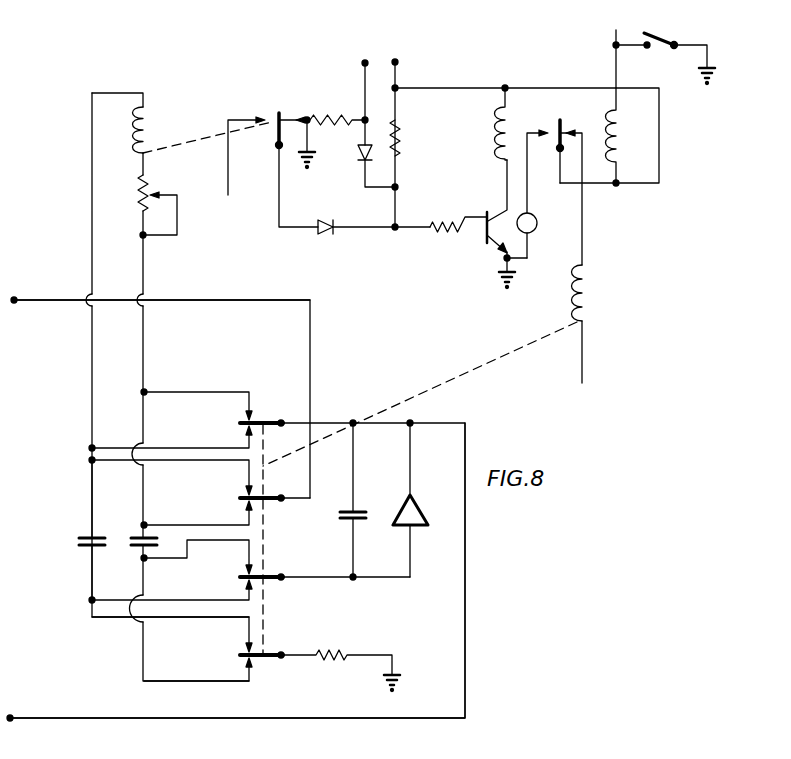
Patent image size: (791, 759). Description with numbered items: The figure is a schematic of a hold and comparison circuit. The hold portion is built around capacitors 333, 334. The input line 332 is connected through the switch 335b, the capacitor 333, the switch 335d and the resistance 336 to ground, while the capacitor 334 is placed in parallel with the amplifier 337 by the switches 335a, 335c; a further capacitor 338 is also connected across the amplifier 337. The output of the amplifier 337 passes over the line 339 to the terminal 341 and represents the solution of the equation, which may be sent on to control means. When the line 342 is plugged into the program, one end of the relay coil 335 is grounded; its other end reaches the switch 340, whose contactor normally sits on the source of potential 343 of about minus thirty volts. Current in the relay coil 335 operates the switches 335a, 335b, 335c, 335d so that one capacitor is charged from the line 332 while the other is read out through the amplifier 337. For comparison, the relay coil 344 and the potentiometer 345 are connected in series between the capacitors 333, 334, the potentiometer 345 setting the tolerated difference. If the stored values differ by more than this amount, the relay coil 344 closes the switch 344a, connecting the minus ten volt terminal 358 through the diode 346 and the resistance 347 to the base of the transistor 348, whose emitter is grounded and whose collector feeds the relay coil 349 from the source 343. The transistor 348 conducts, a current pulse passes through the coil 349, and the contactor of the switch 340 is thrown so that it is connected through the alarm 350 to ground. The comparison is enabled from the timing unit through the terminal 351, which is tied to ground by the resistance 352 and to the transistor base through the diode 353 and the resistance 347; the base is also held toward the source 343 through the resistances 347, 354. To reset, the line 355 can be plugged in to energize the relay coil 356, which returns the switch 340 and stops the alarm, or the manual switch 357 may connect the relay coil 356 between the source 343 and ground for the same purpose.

The line 332 is at (14, 300).
The capacitor 333 is at (138, 536).
The capacitor 334 is at (85, 537).
The relay coil 335 is at (572, 292).
The switch 335a is at (272, 421).
The switch 335b is at (270, 500).
The switch 335c is at (272, 575).
The switch 335d is at (262, 657).
The resistance 336 is at (340, 660).
The amplifier 337 is at (406, 527).
The capacitor 338 is at (346, 520).
The line 339 is at (465, 590).
The switch 340 is at (576, 104).
The terminal 341 is at (10, 718).
The line 342 is at (583, 360).
The source of potential 343 is at (396, 62).
The relay coil 344 is at (143, 108).
The switch 344a is at (278, 114).
The potentiometer 345 is at (143, 177).
The diode 346 is at (325, 236).
The resistance 347 is at (447, 222).
The transistor 348 is at (486, 240).
The relay coil 349 is at (495, 133).
The alarm 350 is at (537, 223).
The terminal 351 is at (365, 63).
The resistance 352 is at (332, 96).
The diode 353 is at (365, 146).
The resistance 354 is at (400, 140).
The line 355 is at (616, 46).
The relay coil 356 is at (618, 134).
The manual switch 357 is at (664, 36).
The terminal 358 is at (228, 193).